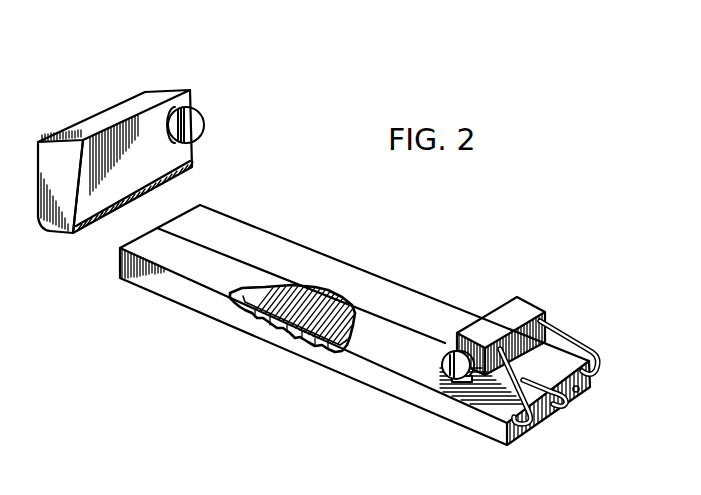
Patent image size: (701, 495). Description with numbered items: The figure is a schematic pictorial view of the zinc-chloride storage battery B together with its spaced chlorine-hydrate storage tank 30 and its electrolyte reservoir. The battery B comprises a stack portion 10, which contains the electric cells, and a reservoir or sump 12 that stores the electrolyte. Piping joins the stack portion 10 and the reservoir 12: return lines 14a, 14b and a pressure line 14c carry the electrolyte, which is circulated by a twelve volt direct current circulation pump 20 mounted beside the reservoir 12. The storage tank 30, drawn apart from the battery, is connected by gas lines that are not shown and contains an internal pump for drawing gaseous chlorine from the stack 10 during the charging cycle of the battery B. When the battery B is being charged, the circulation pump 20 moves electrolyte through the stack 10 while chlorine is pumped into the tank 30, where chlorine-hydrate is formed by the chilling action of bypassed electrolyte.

The storage tank 30 is at (155, 98).
The storage battery B is at (355, 325).
The stack portion 10 is at (433, 297).
The reservoir or sump 12 is at (512, 303).
The return line 14a is at (536, 420).
The return line 14b is at (582, 334).
The pressure line 14c is at (564, 407).
The circulation pump 20 is at (447, 387).